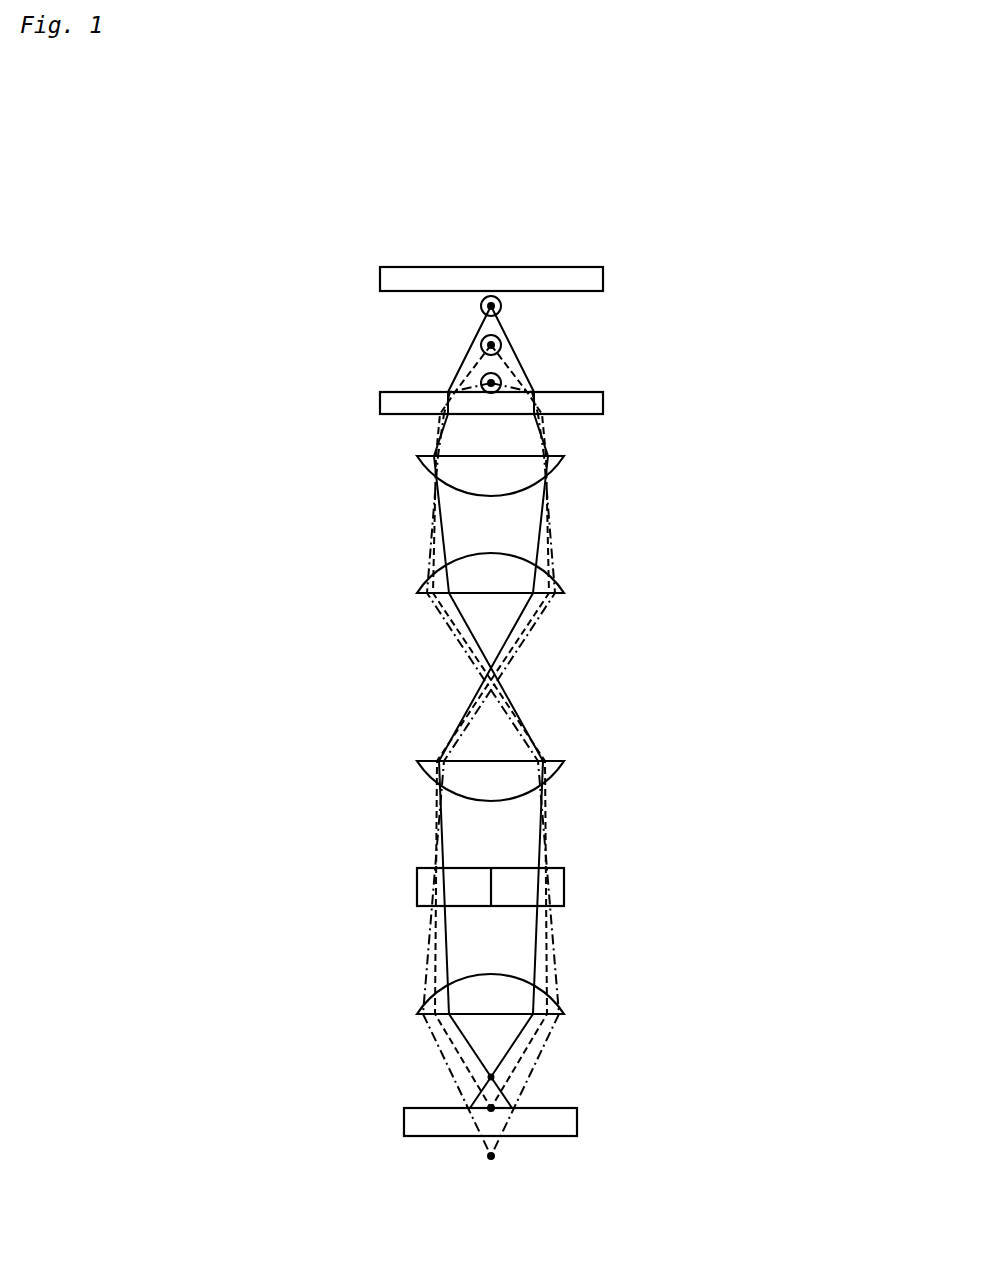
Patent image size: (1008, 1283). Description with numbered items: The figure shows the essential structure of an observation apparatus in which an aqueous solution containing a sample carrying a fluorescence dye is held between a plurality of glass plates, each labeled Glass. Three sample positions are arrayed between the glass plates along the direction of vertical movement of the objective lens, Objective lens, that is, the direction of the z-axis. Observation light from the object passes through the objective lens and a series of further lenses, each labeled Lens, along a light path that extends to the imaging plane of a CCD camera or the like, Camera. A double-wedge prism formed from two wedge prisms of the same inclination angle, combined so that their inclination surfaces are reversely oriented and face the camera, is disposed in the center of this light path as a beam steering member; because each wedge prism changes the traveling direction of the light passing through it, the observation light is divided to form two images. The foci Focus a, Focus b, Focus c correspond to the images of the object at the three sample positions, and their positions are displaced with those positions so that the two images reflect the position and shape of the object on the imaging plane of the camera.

The glass plate Glass is at (437, 342).
The objective lens Objective lens is at (355, 476).
The lens Lens is at (424, 786).
The camera Camera is at (417, 1121).
The focus a Focus a is at (491, 1077).
The focus b Focus b is at (491, 1108).
The focus c Focus c is at (491, 1156).